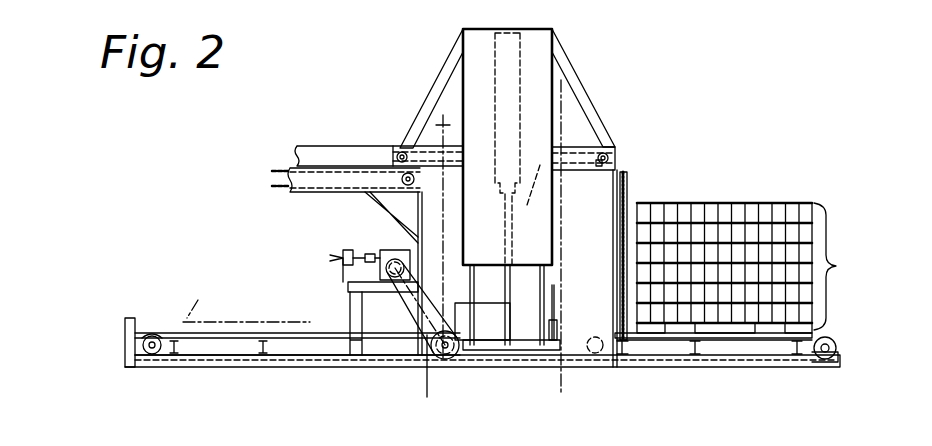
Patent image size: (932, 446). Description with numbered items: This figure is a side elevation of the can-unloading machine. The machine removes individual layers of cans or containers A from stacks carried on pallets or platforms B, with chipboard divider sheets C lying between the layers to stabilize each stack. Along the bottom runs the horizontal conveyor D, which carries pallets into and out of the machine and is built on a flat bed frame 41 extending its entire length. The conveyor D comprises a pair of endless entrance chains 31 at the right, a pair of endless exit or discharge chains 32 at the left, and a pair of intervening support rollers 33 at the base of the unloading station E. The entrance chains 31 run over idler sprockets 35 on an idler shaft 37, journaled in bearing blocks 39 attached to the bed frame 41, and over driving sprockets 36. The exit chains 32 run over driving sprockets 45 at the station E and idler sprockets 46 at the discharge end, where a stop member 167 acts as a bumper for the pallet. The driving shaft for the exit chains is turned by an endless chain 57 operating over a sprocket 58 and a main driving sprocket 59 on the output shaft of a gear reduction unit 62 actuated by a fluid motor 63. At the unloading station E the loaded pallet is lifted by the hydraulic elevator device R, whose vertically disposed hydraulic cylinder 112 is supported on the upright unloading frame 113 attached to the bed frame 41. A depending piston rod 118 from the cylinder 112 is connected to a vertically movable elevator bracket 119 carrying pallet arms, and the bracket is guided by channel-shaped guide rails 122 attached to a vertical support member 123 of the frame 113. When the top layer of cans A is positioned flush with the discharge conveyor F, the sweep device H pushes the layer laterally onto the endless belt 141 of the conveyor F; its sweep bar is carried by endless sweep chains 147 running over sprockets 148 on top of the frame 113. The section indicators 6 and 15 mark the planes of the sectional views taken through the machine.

The entrance chains 31 is at (645, 362).
The stop member 167 is at (126, 332).
The exit or discharge chains 32 is at (230, 333).
The idler sprockets 46 is at (155, 334).
The pallet or platform B is at (198, 296).
The section line 6- 6 is at (448, 125).
The section line 15- 15 is at (563, 88).
The hydraulic cylinder 112 is at (522, 62).
The vertical support member 123 is at (483, 43).
The hydraulic elevator device R is at (448, 78).
The upright unloading frame 113 is at (612, 160).
The sweep chains 147 is at (507, 223).
The discharge conveyor F is at (293, 158).
The endless belt 141 is at (283, 188).
The sprockets 148 is at (380, 197).
The sweep device H is at (597, 167).
The unloading station E is at (602, 192).
The gear reduction unit 62 is at (395, 250).
The fluid motor 63 is at (355, 267).
The main driving sprocket 59 is at (380, 285).
The endless chain 57 is at (372, 323).
The driving sprockets 45 is at (443, 362).
The sprocket 58 is at (467, 332).
The support rollers 33 is at (493, 365).
The guide rails 122 is at (545, 270).
The elevator bracket 119 is at (521, 310).
The piston rod 118 is at (530, 257).
The driving sprockets 36 is at (583, 338).
The layer of cans or containers A is at (715, 232).
The chipboard divider sheet C is at (831, 266).
The flat bed frame 41 is at (697, 360).
The idler sprockets 35 is at (838, 345).
The bearing blocks 39 is at (838, 353).
The idler shaft 37 is at (825, 356).
The horizontal conveyor D is at (819, 335).